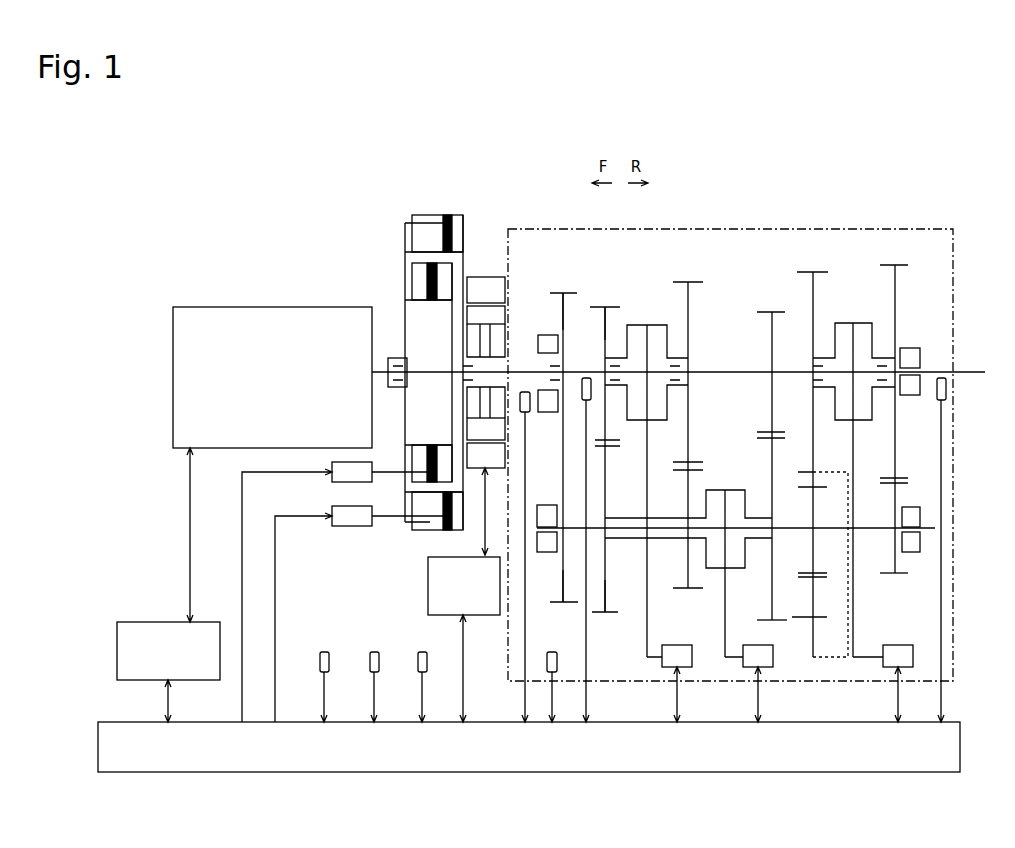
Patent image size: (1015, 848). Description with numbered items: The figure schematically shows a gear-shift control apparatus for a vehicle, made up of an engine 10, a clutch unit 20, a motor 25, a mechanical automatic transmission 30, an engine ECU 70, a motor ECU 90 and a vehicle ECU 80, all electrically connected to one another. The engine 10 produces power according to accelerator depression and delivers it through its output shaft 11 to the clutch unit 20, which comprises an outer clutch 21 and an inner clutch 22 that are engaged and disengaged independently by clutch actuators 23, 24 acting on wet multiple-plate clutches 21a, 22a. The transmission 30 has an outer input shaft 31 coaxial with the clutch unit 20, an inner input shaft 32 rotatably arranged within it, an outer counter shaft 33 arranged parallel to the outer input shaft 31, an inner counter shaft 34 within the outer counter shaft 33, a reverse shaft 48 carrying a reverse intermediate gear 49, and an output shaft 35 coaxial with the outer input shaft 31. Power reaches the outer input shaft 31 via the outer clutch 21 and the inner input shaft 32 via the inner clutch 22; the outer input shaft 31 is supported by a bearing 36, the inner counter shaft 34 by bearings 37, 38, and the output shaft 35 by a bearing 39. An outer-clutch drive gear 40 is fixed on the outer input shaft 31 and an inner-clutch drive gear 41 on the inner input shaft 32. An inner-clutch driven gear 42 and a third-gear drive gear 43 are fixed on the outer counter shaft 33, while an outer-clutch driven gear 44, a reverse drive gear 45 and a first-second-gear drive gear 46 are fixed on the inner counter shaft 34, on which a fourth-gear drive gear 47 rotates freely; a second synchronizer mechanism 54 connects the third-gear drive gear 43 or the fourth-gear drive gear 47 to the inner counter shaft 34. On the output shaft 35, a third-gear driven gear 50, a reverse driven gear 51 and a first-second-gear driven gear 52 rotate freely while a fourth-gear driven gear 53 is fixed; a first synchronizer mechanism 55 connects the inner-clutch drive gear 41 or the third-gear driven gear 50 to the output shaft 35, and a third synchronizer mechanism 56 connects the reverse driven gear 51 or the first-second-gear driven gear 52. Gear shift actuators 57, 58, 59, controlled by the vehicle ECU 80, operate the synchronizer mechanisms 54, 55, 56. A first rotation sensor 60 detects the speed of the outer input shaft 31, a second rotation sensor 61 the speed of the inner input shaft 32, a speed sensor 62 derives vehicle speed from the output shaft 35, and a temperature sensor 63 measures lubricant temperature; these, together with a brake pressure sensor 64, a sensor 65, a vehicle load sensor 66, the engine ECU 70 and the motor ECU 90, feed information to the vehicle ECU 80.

The engine 10 is at (228, 307).
The output shaft 11 is at (396, 358).
The clutch unit 20 is at (401, 339).
The outer clutch 21 is at (408, 339).
The wet multiple-plate clutch 21a is at (437, 235).
The inner clutch 22 is at (397, 363).
The wet multiple-plate clutch 22a is at (425, 280).
The clutch actuator 23 is at (328, 476).
The clutch actuator 24 is at (328, 522).
The motor 25 is at (483, 277).
The transmission 30 is at (748, 229).
The outer input shaft 31 is at (510, 357).
The inner input shaft 32 is at (575, 357).
The outer counter shaft 33 is at (615, 518).
The inner counter shaft 34 is at (578, 527).
The output shaft 35 is at (960, 368).
The bearing 36 is at (546, 335).
The bearing 37 is at (548, 552).
The bearing 38 is at (915, 507).
The bearing 39 is at (910, 348).
The outer-clutch drive gear 40 is at (563, 293).
The inner-clutch drive gear 41 is at (605, 307).
The inner-clutch driven gear 42 is at (605, 613).
The third-gear drive gear 43 is at (690, 590).
The outer-clutch driven gear 44 is at (562, 602).
The reverse drive gear 45 is at (812, 487).
The first-second-gear drive gear 46 is at (895, 575).
The fourth-gear drive gear 47 is at (775, 624).
The reverse shaft 48 is at (800, 613).
The reverse intermediate gear 49 is at (815, 660).
The third-gear driven gear 50 is at (688, 282).
The reverse driven gear 51 is at (813, 272).
The first-second-gear driven gear 52 is at (895, 265).
The fourth-gear driven gear 53 is at (772, 312).
The second synchronizer mechanism 54 is at (725, 578).
The first synchronizer mechanism 55 is at (647, 323).
The third synchronizer mechanism 56 is at (853, 323).
The gear shift actuator 57 is at (765, 668).
The gear shift actuator 58 is at (683, 668).
The gear shift actuator 59 is at (905, 668).
The first rotation sensor 60 is at (525, 412).
The second rotation sensor 61 is at (586, 400).
The speed sensor 62 is at (940, 400).
The temperature sensor 63 is at (553, 672).
The brake pressure sensor 64 is at (328, 673).
The sensor 65 is at (378, 673).
The vehicle load sensor 66 is at (427, 673).
The engine ECU 70 is at (125, 622).
The vehicle ECU 80 is at (352, 773).
The motor ECU 90 is at (428, 578).